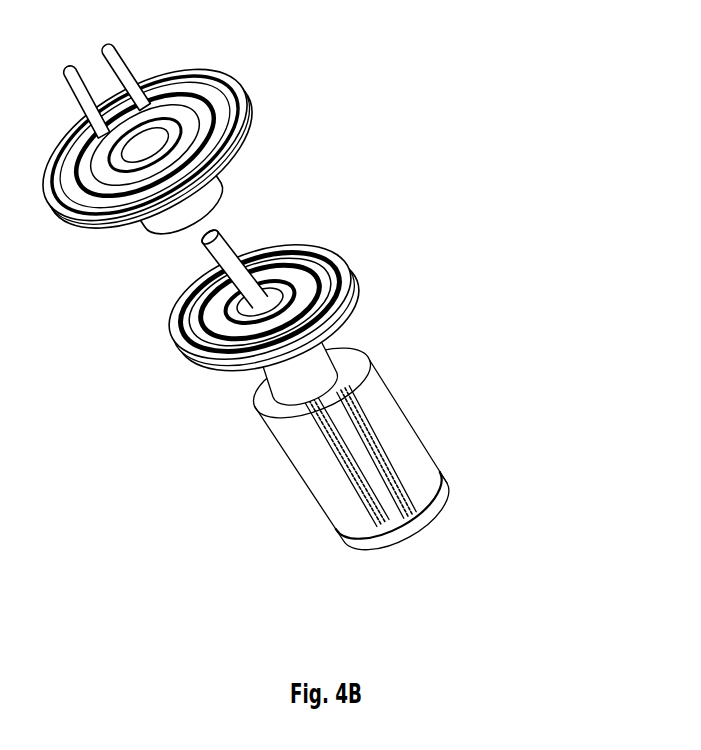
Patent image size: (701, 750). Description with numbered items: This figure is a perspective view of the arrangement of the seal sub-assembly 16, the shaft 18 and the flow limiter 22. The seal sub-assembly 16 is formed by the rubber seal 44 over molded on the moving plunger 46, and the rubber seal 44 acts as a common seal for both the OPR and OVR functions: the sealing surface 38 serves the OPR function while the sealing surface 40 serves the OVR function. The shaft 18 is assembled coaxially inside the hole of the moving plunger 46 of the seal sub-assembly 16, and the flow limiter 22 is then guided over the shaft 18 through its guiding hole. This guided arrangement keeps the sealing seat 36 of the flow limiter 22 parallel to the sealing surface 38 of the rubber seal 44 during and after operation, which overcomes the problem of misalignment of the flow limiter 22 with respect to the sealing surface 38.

The seal sub-assembly 16 is at (330, 289).
The shaft 18 is at (232, 245).
The flow limiter 22 is at (250, 98).
The sealing seat 36 is at (163, 225).
The sealing surface 38 is at (307, 245).
The sealing surface 40 is at (167, 328).
The rubber seal 44 is at (182, 362).
The moving plunger 46 is at (400, 433).